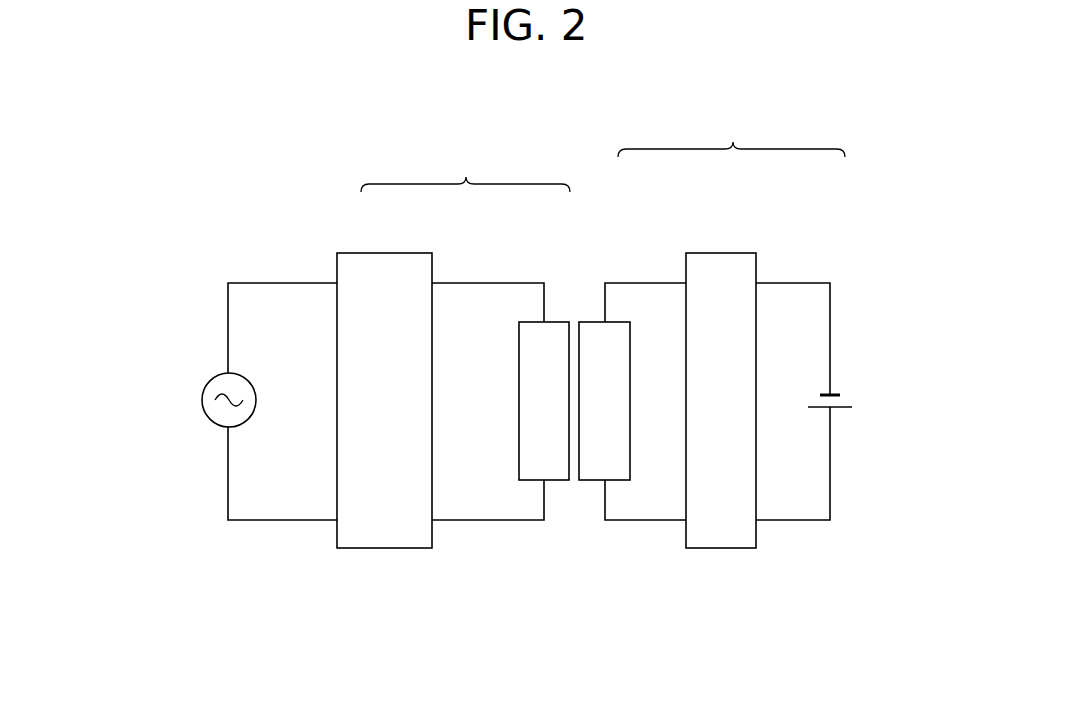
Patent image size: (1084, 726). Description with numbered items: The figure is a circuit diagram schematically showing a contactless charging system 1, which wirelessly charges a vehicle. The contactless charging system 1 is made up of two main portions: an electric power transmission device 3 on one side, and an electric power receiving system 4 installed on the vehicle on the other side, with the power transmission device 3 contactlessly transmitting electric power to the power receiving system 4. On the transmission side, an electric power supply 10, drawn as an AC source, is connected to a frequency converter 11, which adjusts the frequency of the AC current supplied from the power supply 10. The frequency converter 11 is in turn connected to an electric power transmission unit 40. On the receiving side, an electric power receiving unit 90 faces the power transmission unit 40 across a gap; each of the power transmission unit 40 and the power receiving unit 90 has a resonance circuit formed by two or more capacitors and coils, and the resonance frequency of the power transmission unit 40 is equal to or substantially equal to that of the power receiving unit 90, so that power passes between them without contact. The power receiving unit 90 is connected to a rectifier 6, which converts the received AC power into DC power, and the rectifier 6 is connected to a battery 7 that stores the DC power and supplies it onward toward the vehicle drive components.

The contactless charging system 1 is at (525, 128).
The electric power transmission device 3 is at (465, 172).
The electric power receiving system 4 is at (731, 138).
The electric power supply 10 is at (203, 389).
The frequency converter 11 is at (387, 253).
The electric power transmission unit 40 is at (555, 321).
The electric power receiving unit 90 is at (627, 321).
The rectifier 6 is at (724, 253).
The battery 7 is at (837, 393).